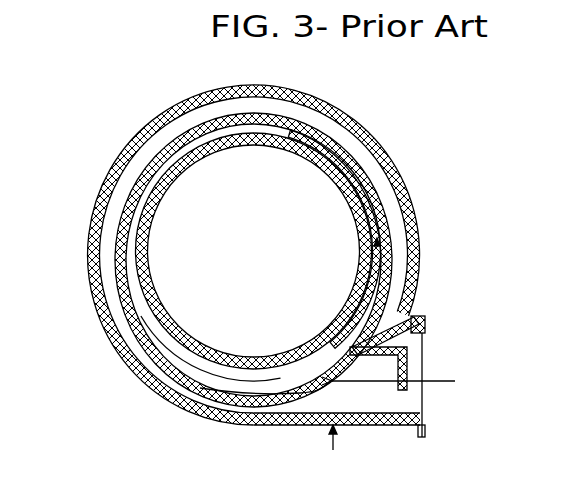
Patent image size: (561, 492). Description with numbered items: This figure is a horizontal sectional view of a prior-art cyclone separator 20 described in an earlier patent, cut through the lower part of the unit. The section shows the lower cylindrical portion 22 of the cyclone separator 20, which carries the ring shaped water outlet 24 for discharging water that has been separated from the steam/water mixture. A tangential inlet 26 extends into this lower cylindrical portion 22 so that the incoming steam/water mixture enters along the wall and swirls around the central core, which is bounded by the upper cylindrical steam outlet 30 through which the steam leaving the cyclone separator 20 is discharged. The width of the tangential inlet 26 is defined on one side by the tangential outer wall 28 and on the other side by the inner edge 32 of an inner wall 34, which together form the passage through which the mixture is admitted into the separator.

The cyclone separator 20 is at (88, 183).
The lower cylindrical portion 22 is at (387, 152).
The ring shaped water outlet 24 is at (118, 304).
The tangential inlet 26 is at (418, 357).
The tangential outer wall 28 is at (366, 426).
The upper cylindrical steam outlet 30 is at (300, 251).
The inner edge 32 is at (343, 340).
The inner wall 34 is at (410, 308).